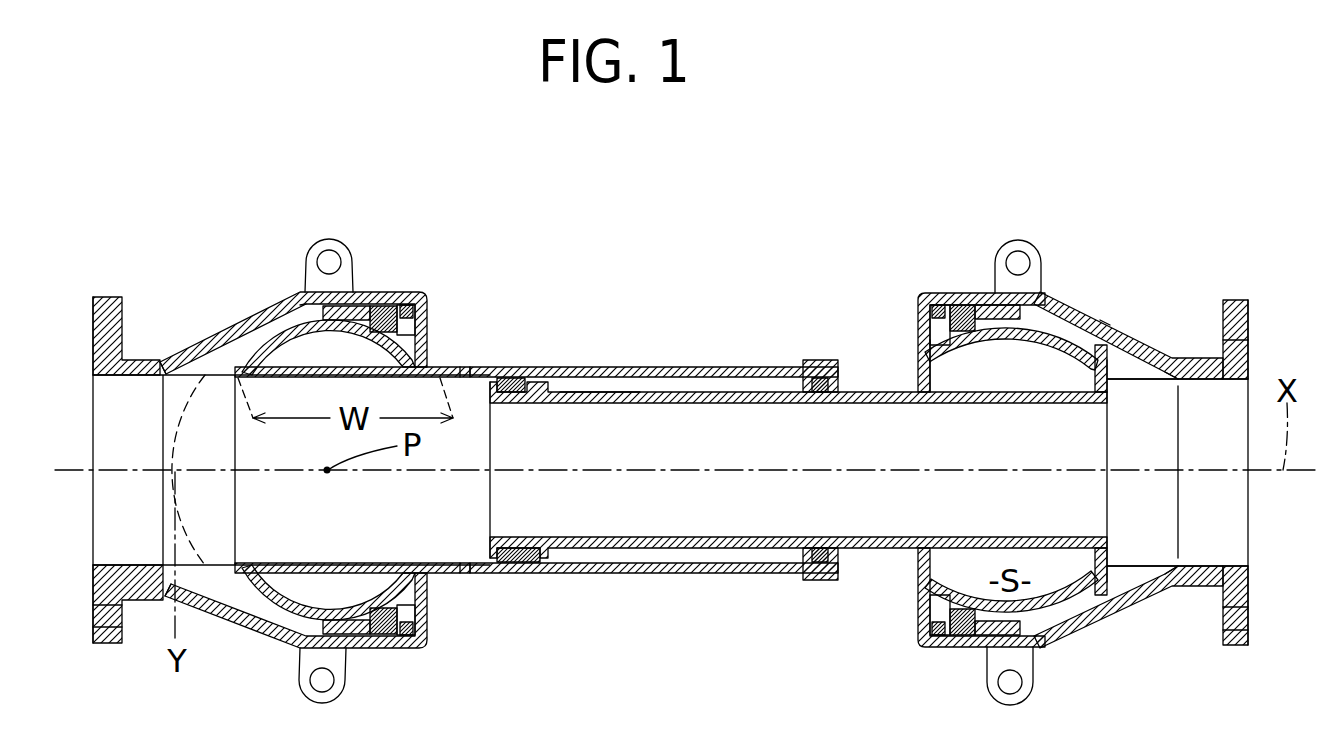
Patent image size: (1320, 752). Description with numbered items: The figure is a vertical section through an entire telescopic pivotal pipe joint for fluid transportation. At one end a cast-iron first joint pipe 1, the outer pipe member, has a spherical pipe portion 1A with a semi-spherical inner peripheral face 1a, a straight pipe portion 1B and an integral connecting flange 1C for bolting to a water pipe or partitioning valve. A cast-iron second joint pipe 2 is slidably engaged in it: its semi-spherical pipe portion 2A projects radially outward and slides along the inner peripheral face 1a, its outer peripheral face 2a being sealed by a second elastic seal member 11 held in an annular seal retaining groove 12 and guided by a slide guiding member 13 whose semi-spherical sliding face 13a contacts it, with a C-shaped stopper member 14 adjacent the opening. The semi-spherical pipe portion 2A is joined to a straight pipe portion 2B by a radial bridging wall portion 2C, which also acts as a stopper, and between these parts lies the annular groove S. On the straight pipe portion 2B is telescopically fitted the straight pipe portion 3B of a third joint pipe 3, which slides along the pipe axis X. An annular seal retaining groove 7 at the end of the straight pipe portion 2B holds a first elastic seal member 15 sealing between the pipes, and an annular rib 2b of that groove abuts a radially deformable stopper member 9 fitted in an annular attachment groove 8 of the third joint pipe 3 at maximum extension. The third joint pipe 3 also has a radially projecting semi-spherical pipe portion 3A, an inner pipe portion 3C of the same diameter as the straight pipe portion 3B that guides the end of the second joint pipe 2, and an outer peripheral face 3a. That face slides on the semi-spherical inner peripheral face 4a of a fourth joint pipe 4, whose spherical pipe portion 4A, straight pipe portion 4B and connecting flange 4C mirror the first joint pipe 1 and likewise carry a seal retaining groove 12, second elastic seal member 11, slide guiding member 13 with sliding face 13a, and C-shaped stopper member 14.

The first joint pipe 1 is at (1141, 436).
The spherical pipe portion 1A is at (1053, 305).
The straight pipe portion 1B is at (1198, 362).
The connecting flange 1C is at (1220, 431).
The semi-spherical inner peripheral face 1a is at (1092, 578).
The second joint pipe 2 is at (834, 496).
The semi-spherical pipe portion 2A is at (961, 475).
The straight pipe portion 2B is at (798, 492).
The bridging wall portion 2C is at (1115, 380).
The outer peripheral face 2a is at (928, 343).
The annular rib 2b is at (605, 382).
The third joint pipe 3 is at (536, 499).
The semi-spherical pipe portion 3A is at (390, 580).
The straight pipe portion 3B is at (612, 577).
The inner pipe portion 3C is at (460, 565).
The outer peripheral face 3a is at (430, 362).
The fourth joint pipe 4 is at (260, 431).
The spherical pipe portion 4A is at (237, 347).
The straight pipe portion 4B is at (160, 357).
The connecting flange 4C is at (115, 297).
The semi-spherical inner peripheral face 4a is at (280, 598).
The annular seal retaining groove 7 is at (525, 383).
The annular attachment groove 8 is at (818, 545).
The stopper member 9 is at (820, 390).
The second elastic seal member 11 is at (352, 628).
The annular seal retaining groove 12 is at (357, 622).
The slide guiding member 13 is at (390, 310).
The semi-spherical sliding face 13a is at (368, 612).
The C-shaped stopper member 14 is at (420, 320).
The first elastic seal member 15 is at (520, 550).